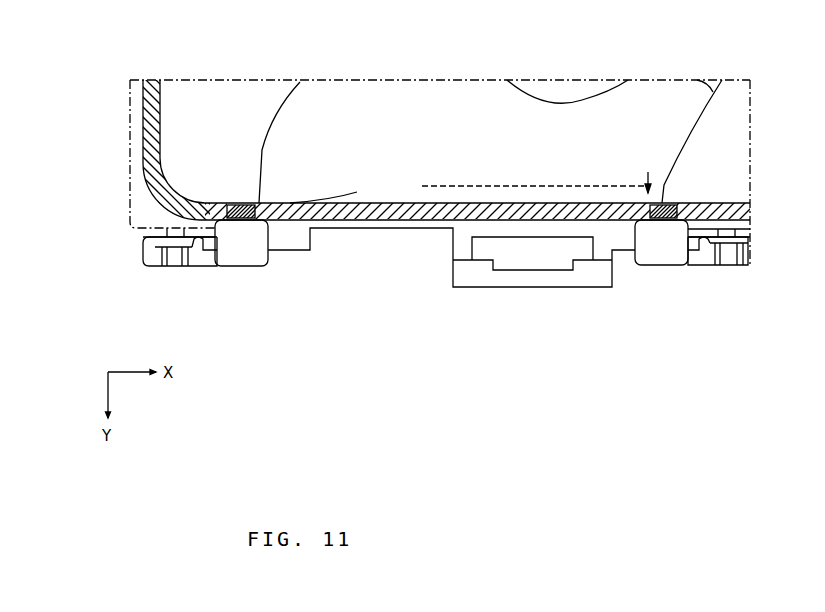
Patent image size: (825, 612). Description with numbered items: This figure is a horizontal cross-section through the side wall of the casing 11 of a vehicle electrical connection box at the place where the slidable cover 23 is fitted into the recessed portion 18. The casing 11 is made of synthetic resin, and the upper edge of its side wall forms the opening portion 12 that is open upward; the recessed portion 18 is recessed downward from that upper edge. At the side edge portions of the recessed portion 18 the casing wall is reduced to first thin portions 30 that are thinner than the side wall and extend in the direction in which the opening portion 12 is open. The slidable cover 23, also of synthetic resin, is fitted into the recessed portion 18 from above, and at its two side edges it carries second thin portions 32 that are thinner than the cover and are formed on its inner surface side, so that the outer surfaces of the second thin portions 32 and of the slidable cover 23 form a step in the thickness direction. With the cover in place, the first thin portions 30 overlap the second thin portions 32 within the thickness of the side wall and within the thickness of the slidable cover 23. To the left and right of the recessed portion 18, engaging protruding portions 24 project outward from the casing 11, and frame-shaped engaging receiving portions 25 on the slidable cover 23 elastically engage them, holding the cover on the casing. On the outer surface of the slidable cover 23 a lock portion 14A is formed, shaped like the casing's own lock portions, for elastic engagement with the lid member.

The casing 11 is at (145, 110).
The opening portion 12 is at (160, 102).
The slidable cover 23 is at (145, 137).
The second thin portions 32 is at (250, 196).
The recessed portion 18 is at (256, 220).
The first thin portions 30 is at (240, 214).
The engaging receiving portions 25 is at (152, 253).
The engaging protruding portions 24 is at (173, 262).
The lock portion 14A is at (532, 290).